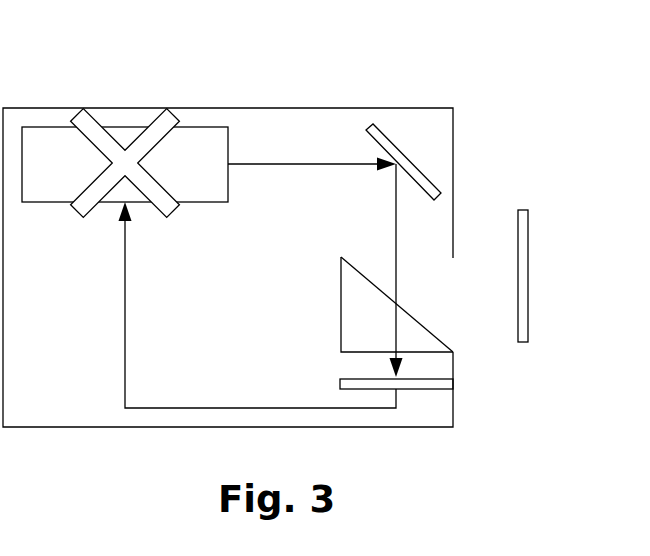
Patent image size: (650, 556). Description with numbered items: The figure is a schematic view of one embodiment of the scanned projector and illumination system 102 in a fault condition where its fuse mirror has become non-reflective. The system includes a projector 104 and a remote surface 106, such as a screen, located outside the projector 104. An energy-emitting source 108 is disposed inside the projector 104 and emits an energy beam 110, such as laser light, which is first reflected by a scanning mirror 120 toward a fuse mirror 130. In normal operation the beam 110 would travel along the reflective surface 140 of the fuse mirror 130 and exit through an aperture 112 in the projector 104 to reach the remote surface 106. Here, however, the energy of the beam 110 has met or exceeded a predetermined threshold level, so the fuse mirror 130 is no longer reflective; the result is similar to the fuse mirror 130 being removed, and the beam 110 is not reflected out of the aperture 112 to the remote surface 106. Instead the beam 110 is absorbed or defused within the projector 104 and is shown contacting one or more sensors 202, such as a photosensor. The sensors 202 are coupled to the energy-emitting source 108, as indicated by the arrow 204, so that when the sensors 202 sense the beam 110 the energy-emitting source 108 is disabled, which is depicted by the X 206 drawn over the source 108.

The scanned projector and illumination system 102 is at (443, 79).
The projector 104 is at (48, 108).
The remote surface 106 is at (528, 253).
The energy-emitting source 108 is at (128, 126).
The energy beam 110 is at (297, 163).
The aperture 112 is at (468, 330).
The scanning mirror 120 is at (428, 182).
The fuse mirror 130 is at (340, 310).
The reflective surface 140 is at (352, 264).
The sensor 202 is at (340, 385).
The arrow 204 is at (124, 332).
The X 206 is at (80, 208).